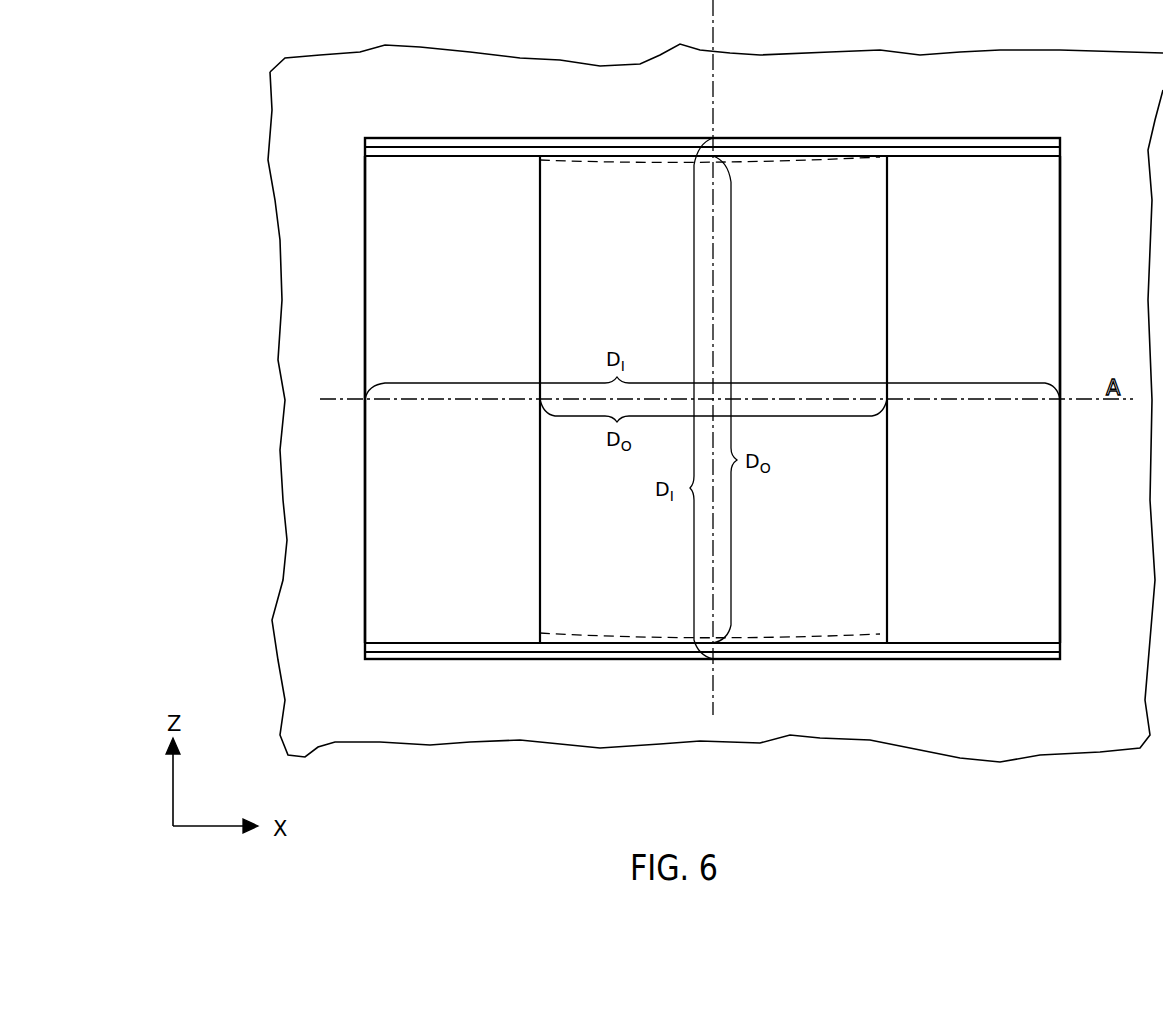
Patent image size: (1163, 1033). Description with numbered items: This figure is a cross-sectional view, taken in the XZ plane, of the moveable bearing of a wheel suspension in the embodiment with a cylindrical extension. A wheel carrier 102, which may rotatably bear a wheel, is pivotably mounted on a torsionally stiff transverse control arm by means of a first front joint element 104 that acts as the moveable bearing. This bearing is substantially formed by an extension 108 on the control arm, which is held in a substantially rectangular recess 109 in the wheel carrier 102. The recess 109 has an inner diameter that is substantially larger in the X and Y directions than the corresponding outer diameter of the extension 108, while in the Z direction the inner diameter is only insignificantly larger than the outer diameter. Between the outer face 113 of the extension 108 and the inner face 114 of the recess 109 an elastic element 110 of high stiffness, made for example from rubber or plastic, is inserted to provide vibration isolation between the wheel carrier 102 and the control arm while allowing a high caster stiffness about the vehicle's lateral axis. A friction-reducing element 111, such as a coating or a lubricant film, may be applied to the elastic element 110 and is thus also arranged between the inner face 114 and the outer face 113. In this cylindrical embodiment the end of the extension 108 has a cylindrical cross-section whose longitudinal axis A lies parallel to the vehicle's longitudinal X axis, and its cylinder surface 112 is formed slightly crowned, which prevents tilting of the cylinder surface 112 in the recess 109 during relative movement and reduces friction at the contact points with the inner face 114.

The wheel carrier 102 is at (288, 555).
The first front joint element 104 is at (345, 267).
The extension 108 is at (873, 550).
The recess 109 is at (383, 192).
The elastic element 110 is at (1062, 141).
The friction-reducing element 111 is at (1062, 149).
The cylinder surface 112 is at (542, 146).
The outer face 113 is at (688, 165).
The inner face 114 is at (641, 137).